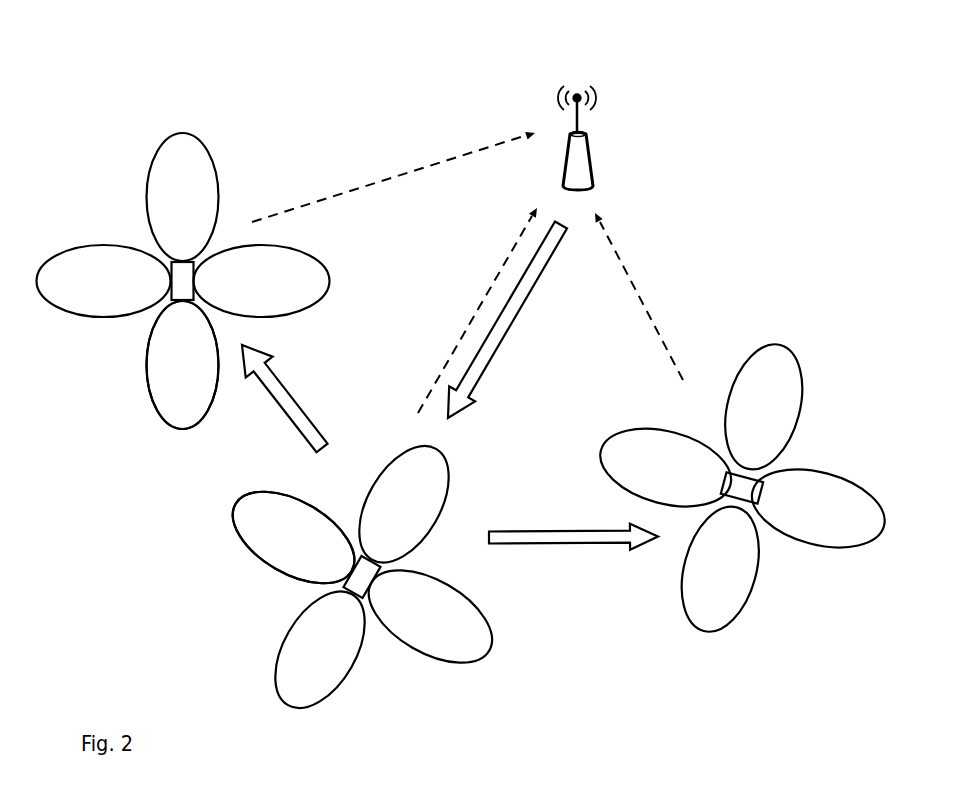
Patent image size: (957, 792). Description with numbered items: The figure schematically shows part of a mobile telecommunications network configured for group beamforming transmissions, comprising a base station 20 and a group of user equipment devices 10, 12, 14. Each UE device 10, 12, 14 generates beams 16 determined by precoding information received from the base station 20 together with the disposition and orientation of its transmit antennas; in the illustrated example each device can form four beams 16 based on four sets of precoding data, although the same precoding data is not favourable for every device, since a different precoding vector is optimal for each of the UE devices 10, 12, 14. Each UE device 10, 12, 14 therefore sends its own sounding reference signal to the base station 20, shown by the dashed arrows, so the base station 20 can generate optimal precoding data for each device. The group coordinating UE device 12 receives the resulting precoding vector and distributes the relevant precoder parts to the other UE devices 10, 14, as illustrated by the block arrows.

The user equipment device 10 is at (182, 260).
The group coordinating user equipment device 12 is at (348, 586).
The user equipment device 14 is at (758, 492).
The beams 16 is at (232, 503).
The base station 20 is at (590, 145).